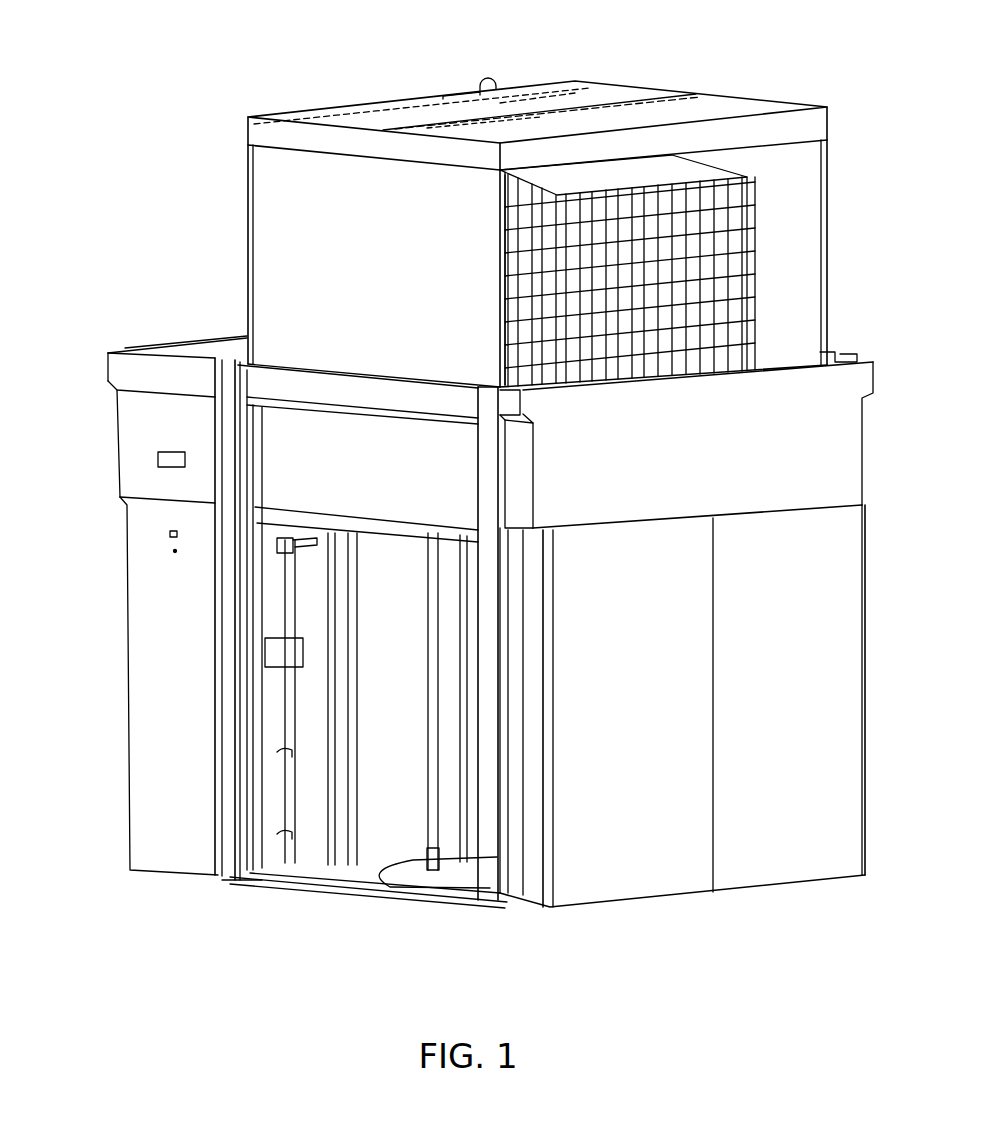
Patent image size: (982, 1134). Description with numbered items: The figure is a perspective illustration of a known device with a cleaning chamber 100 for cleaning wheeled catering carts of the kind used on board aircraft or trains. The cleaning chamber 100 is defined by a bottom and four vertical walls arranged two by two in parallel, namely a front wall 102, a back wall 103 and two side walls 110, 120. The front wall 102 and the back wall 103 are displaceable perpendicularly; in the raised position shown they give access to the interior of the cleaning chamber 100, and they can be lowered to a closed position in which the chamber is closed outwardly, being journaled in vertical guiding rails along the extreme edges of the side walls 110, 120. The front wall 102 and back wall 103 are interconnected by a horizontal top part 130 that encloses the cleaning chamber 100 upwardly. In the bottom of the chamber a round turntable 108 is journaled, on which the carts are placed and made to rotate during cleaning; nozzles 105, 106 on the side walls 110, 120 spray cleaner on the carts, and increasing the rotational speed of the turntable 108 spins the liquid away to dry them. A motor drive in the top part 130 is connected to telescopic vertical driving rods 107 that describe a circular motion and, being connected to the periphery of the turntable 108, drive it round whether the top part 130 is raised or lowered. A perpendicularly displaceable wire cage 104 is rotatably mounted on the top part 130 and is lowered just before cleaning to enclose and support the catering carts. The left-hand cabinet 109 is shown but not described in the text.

The cleaning chamber 100 is at (607, 872).
The front wall 102 is at (295, 277).
The back wall 103 is at (800, 217).
The wire cage 104 is at (755, 307).
The nozzle 105 is at (353, 843).
The nozzle 106 is at (288, 853).
The telescopic vertical driving rod 107 is at (432, 843).
The turntable 108 is at (460, 877).
The left side cabinet 109 is at (180, 840).
The side wall 110 is at (773, 835).
The side wall 120 is at (315, 597).
The top part 130 is at (536, 120).